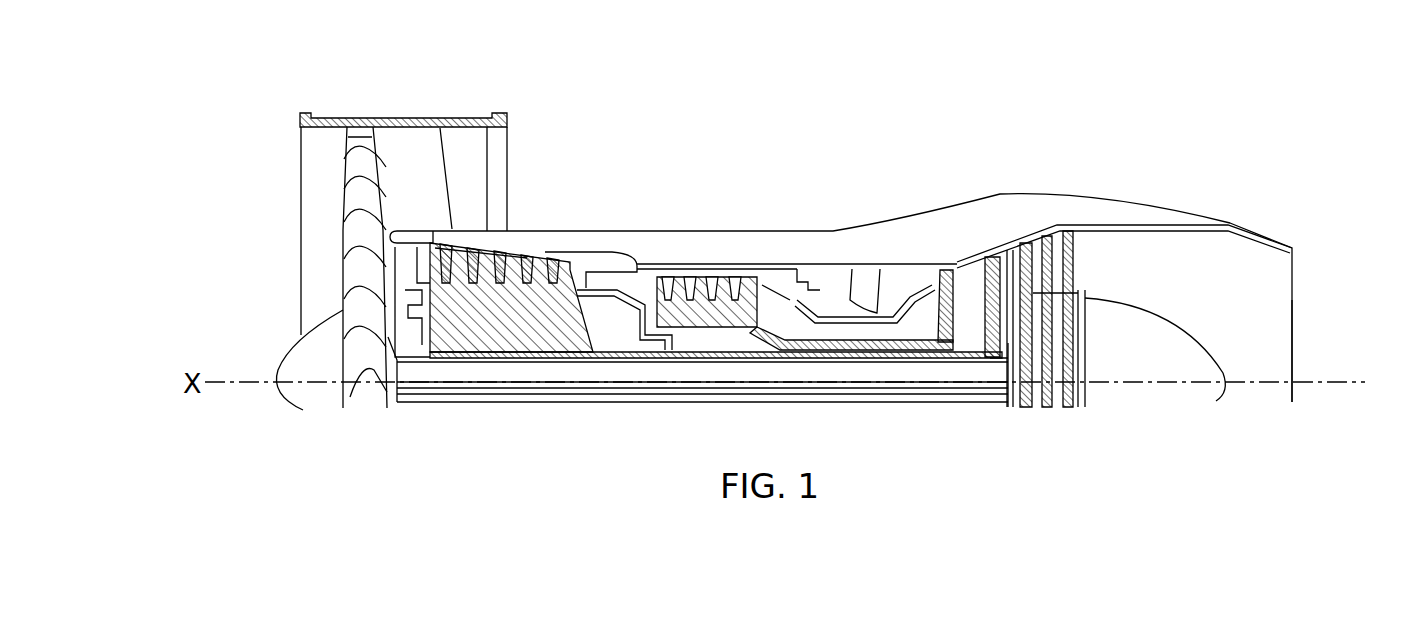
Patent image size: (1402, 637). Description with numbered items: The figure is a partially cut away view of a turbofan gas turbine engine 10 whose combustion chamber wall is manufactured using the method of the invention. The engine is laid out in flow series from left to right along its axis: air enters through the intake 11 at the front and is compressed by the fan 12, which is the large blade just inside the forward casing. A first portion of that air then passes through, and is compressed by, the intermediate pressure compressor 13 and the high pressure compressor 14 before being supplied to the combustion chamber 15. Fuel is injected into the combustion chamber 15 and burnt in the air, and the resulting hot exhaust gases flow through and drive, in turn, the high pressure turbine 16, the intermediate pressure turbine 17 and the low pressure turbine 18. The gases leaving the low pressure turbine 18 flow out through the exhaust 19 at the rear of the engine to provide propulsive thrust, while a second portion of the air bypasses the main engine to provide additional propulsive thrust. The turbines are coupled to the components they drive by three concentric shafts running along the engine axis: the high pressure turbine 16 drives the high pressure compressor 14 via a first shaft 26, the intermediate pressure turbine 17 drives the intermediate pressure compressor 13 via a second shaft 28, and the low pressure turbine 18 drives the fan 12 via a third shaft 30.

The turbofan gas turbine engine 10 is at (682, 147).
The intake 11 is at (268, 243).
The fan 12 is at (362, 147).
The intermediate pressure compressor 13 is at (508, 297).
The high pressure compressor 14 is at (705, 285).
The combustion chamber 15 is at (866, 254).
The high pressure turbine 16 is at (947, 264).
The intermediate pressure turbine 17 is at (993, 258).
The low pressure turbine 18 is at (1047, 236).
The exhaust 19 is at (1278, 323).
The first shaft 26 is at (870, 350).
The second shaft 28 is at (640, 358).
The third shaft 30 is at (540, 402).